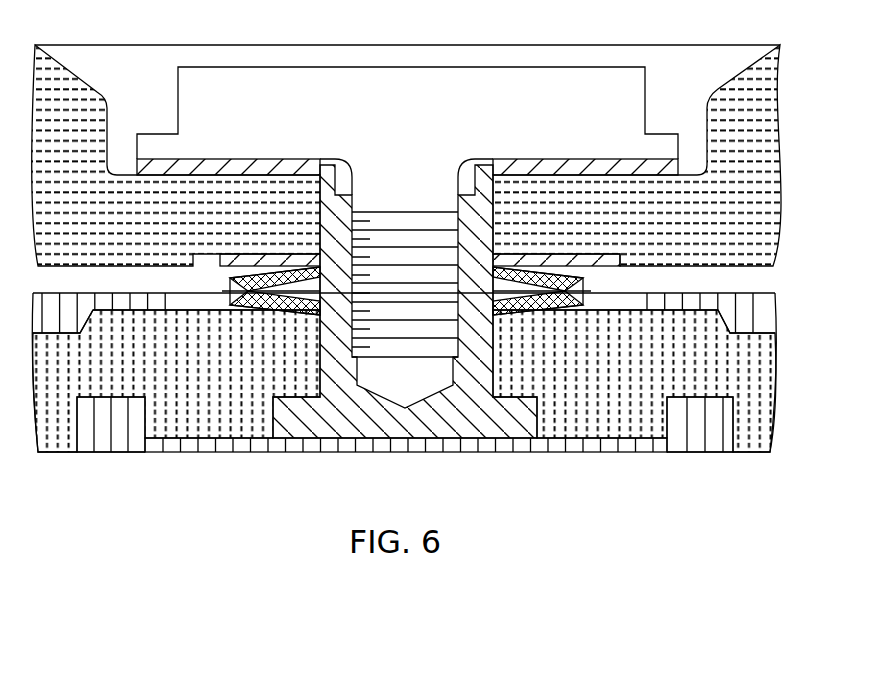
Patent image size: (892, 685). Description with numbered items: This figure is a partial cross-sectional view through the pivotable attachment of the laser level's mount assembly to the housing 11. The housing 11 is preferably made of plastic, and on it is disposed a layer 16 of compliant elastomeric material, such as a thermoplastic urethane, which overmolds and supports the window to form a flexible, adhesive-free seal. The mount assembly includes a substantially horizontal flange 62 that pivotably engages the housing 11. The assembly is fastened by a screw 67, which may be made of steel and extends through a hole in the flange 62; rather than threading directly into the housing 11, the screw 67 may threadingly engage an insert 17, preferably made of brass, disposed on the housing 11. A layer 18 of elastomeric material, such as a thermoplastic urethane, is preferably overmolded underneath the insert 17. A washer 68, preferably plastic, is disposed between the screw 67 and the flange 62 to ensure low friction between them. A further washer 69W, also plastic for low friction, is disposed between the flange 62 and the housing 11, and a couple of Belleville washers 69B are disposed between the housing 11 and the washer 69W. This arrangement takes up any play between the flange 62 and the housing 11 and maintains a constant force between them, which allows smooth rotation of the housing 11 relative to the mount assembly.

The housing 11 is at (763, 412).
The layer of compliant elastomeric material 16 is at (760, 312).
The insert 17 is at (388, 432).
The layer 18 is at (433, 445).
The flange 62 is at (772, 187).
The screw 67 is at (547, 80).
The washer 68 is at (630, 166).
The washer 69W is at (587, 262).
The Belleville washers 69B is at (583, 293).